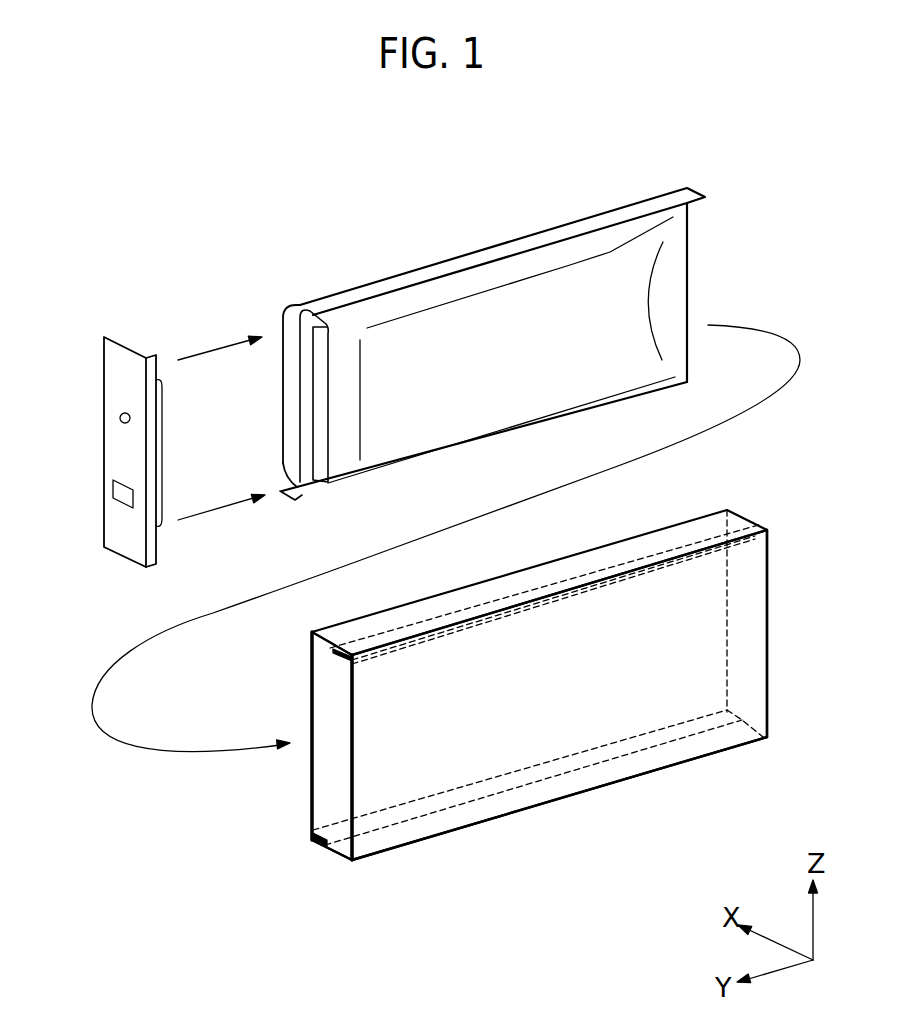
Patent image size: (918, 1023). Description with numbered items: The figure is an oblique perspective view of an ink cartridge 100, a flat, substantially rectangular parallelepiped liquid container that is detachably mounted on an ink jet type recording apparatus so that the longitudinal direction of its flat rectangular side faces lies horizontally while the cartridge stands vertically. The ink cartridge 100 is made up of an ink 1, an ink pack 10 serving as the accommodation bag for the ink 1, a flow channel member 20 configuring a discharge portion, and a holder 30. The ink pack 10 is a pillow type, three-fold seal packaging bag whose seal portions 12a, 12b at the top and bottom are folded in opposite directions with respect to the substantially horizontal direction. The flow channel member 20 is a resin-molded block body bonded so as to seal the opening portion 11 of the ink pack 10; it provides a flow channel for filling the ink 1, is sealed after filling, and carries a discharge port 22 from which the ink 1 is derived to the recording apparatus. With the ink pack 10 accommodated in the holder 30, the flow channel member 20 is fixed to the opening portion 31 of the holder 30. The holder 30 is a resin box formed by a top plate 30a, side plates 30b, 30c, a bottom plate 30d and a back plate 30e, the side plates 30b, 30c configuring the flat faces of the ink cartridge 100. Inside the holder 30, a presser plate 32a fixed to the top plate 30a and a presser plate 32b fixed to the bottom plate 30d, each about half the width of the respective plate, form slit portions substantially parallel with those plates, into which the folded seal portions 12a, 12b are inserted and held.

The ink cartridge 100 is at (208, 202).
The ink 1 is at (538, 386).
The ink pack 10 is at (450, 415).
The opening portion 11 is at (292, 365).
The seal portion 12a is at (413, 277).
The seal portion 12b is at (282, 493).
The flow channel member 20 is at (112, 368).
The discharge port 22 is at (118, 420).
The holder 30 is at (782, 561).
The top plate 30a is at (580, 567).
The side plate 30b is at (553, 717).
The side plate 30c is at (672, 523).
The bottom plate 30d is at (343, 858).
The back plate 30e is at (767, 717).
The opening portion 31 is at (310, 702).
The presser plate 32a is at (340, 653).
The presser plate 32b is at (328, 835).